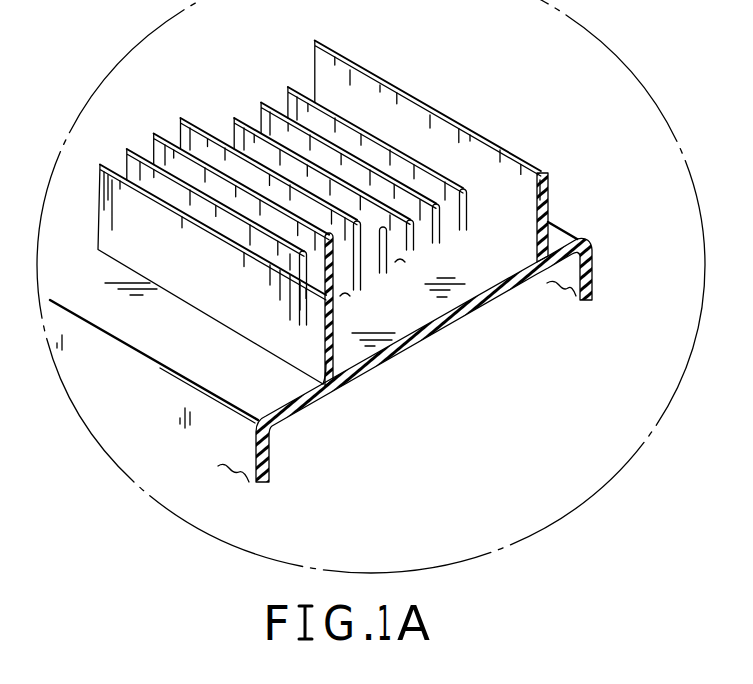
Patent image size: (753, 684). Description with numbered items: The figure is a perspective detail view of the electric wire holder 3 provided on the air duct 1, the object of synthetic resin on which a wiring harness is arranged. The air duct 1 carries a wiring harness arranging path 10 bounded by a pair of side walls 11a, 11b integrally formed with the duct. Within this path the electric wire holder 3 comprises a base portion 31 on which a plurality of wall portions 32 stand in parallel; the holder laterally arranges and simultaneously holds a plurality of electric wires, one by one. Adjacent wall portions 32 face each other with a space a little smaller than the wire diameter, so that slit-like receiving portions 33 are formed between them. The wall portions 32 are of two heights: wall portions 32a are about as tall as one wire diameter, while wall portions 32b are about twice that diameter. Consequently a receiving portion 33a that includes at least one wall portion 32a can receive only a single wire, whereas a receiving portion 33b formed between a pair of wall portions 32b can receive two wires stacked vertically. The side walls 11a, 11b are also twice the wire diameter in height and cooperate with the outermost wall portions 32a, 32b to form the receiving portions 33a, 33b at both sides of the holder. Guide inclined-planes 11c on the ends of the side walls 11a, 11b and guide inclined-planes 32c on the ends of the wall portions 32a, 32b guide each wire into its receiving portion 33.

The air duct 1 is at (228, 422).
The electric wire holder 3 is at (227, 108).
The wiring harness arranging path 10 is at (553, 270).
The side wall 11a is at (548, 200).
The side wall 11b is at (182, 378).
The guide inclined-plane 11c is at (512, 163).
The base portion 31 is at (443, 223).
The wall portions 32 is at (630, 405).
The wall portion 32a is at (450, 233).
The wall portion 32b is at (388, 225).
The guide inclined-plane 32c is at (330, 240).
The receiving portion 33 is at (447, 10).
The receiving portion 33a is at (410, 182).
The receiving portion 33b is at (225, 193).